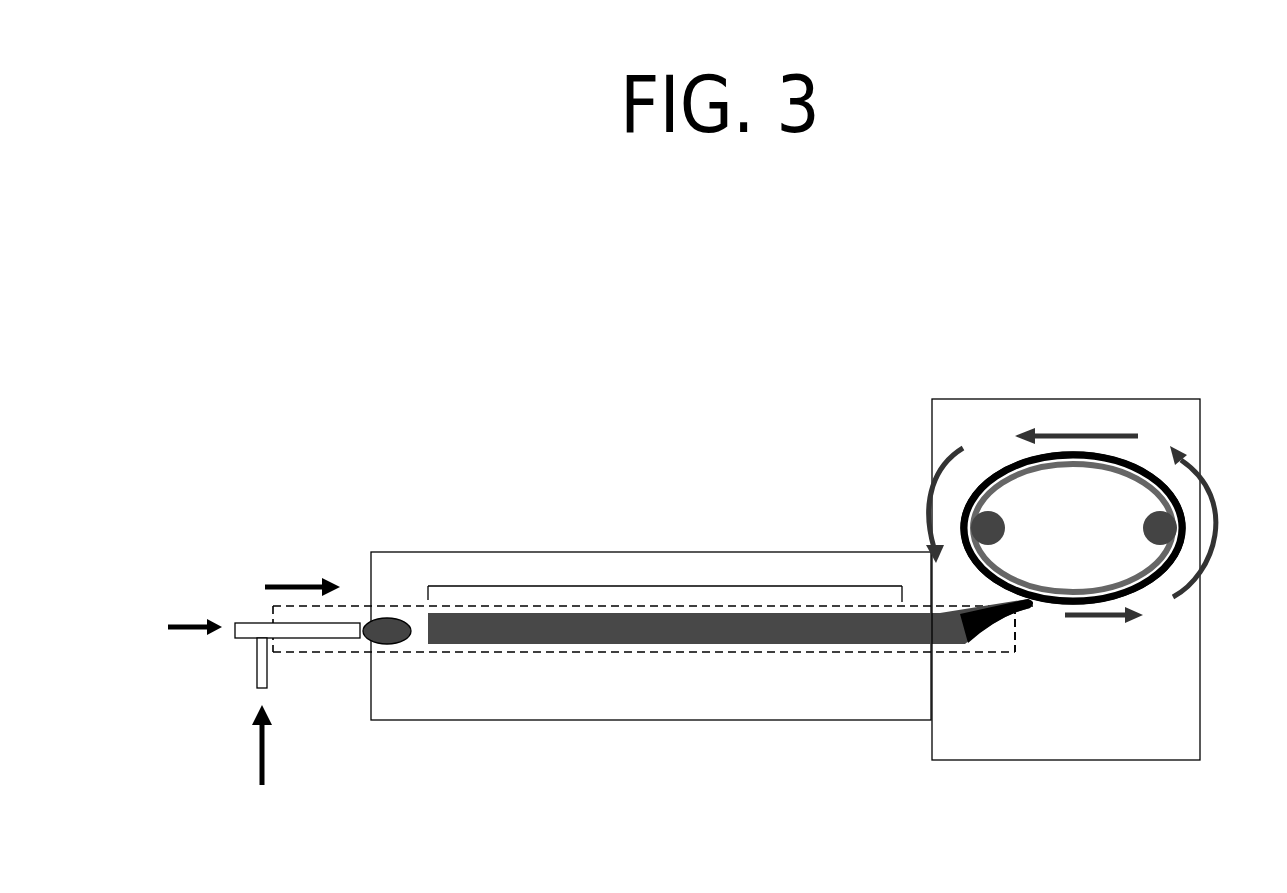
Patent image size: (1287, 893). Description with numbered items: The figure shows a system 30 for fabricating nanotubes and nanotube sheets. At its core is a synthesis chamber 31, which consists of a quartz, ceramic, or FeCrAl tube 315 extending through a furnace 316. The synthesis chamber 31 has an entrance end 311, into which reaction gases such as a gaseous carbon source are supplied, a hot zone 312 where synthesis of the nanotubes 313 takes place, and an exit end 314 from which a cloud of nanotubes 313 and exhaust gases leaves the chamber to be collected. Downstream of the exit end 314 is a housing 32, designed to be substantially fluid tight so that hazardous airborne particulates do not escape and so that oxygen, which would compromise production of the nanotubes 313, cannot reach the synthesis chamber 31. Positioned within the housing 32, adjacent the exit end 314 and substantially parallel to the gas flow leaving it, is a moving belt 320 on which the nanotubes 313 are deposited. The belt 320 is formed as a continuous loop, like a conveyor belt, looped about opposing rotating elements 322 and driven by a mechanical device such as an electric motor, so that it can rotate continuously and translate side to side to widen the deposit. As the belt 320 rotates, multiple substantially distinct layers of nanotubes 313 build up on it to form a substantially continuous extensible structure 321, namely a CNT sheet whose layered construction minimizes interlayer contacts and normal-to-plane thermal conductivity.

The system 30 is at (692, 594).
The synthesis chamber 31 is at (392, 616).
The entrance end 311 is at (272, 653).
The hot zone 312 is at (655, 585).
The nanotubes 313 is at (1020, 617).
The exit end 314 is at (1005, 652).
The tube 315 is at (485, 653).
The furnace 316 is at (752, 720).
The housing 32 is at (1078, 398).
The moving belt 320 is at (1133, 567).
The continuous extensible structure 321 is at (1007, 473).
The rotating elements 322 is at (1003, 532).